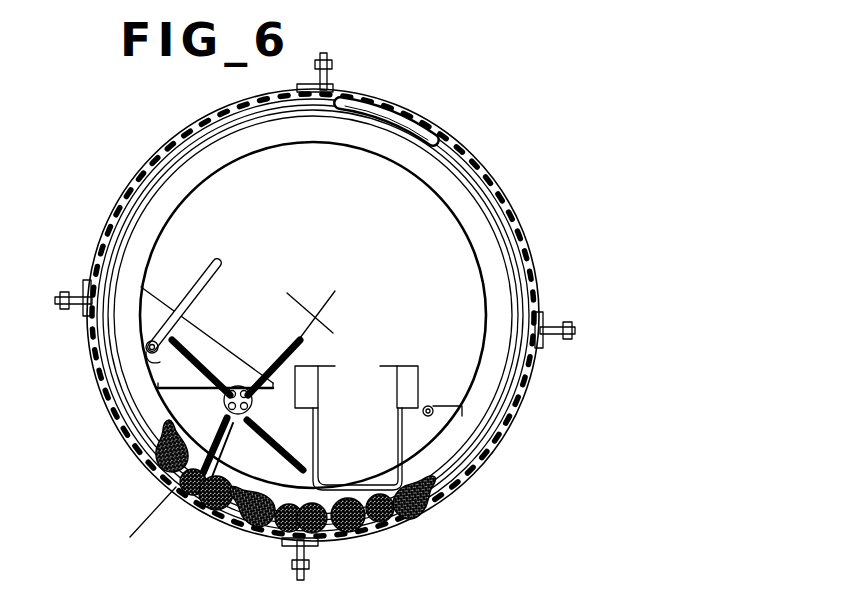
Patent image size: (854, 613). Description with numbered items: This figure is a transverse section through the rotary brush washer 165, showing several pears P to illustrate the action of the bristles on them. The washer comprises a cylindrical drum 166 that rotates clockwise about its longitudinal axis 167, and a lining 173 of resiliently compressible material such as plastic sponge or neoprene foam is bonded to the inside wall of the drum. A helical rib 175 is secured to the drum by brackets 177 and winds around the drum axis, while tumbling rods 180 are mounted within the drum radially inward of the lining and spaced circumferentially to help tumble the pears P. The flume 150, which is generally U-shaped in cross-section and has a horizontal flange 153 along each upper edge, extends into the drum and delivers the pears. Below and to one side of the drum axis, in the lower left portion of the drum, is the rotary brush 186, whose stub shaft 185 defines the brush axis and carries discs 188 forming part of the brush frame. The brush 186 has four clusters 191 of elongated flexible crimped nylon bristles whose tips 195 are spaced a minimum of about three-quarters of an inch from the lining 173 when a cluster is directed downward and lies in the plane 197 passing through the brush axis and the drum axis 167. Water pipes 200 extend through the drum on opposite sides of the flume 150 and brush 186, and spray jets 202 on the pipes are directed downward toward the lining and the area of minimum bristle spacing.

The flume 150 is at (355, 405).
The horizontal flange 153 is at (397, 366).
The rotary brush washer 165 is at (505, 174).
The cylindrical drum 166 is at (358, 102).
The longitudinal axis of drum 167 is at (333, 307).
The lining 173 is at (108, 348).
The helical rib 175 is at (217, 137).
The brackets 177 is at (297, 90).
The tumbling rods 180 is at (164, 157).
The stub shaft 185 is at (222, 405).
The rotary brush 186 is at (200, 352).
The discs 188 is at (237, 389).
The clusters of bristles 191 is at (297, 347).
The bristle tips 195 is at (183, 333).
The plane 197 is at (148, 514).
The water pipes 200 is at (153, 353).
The spray jets 202 is at (153, 362).
The pears P is at (165, 470).